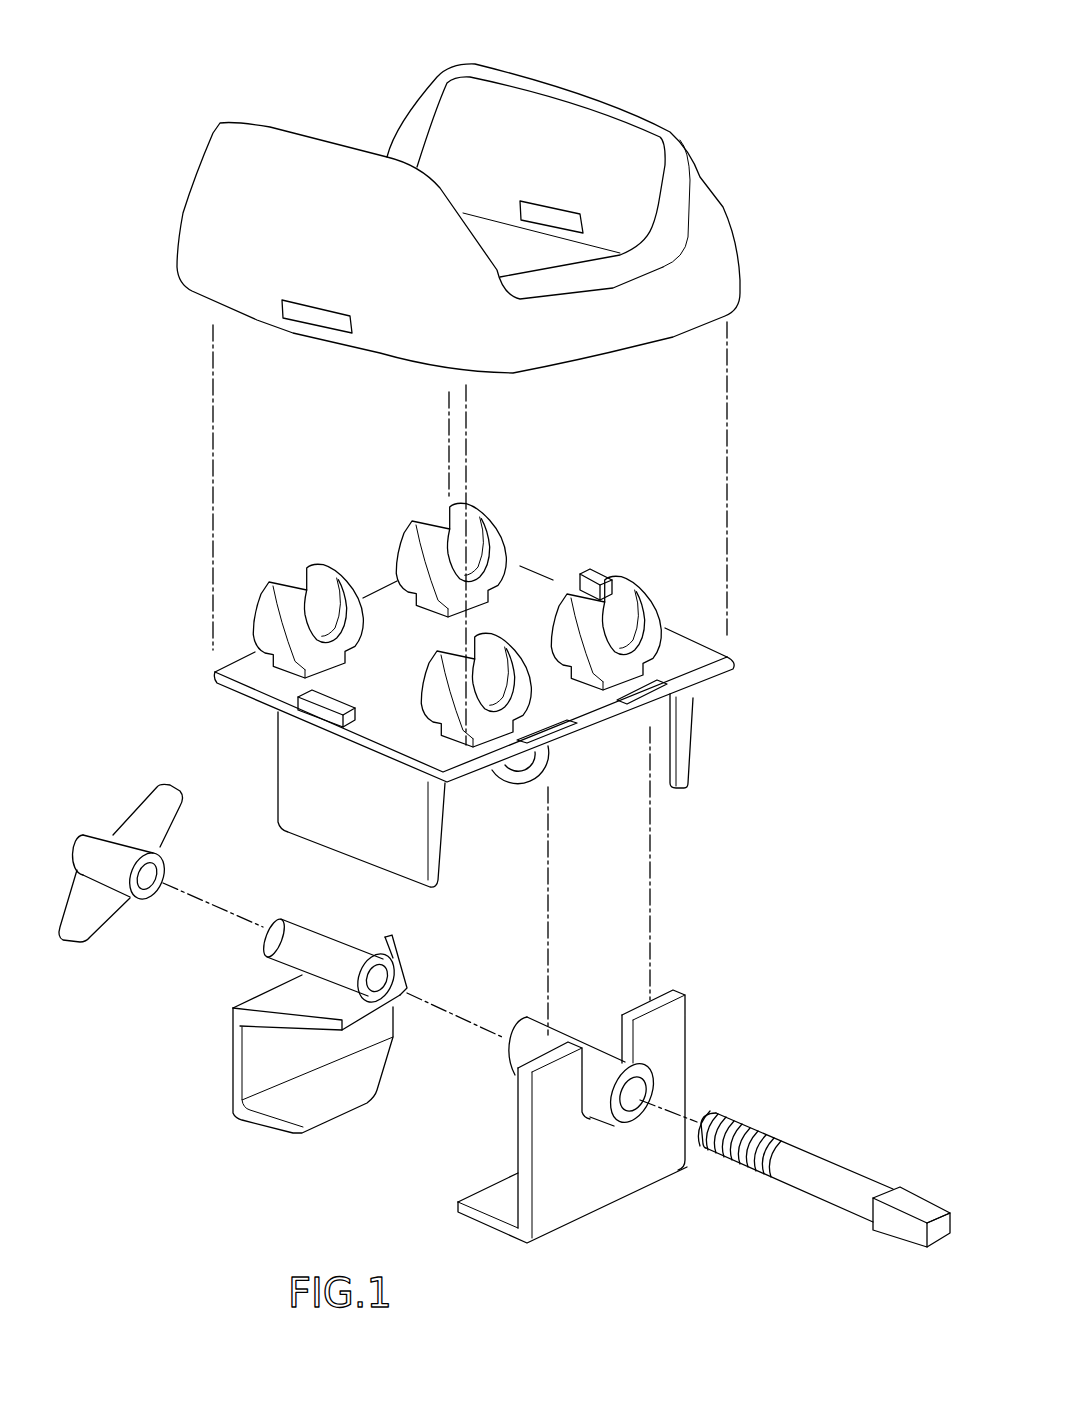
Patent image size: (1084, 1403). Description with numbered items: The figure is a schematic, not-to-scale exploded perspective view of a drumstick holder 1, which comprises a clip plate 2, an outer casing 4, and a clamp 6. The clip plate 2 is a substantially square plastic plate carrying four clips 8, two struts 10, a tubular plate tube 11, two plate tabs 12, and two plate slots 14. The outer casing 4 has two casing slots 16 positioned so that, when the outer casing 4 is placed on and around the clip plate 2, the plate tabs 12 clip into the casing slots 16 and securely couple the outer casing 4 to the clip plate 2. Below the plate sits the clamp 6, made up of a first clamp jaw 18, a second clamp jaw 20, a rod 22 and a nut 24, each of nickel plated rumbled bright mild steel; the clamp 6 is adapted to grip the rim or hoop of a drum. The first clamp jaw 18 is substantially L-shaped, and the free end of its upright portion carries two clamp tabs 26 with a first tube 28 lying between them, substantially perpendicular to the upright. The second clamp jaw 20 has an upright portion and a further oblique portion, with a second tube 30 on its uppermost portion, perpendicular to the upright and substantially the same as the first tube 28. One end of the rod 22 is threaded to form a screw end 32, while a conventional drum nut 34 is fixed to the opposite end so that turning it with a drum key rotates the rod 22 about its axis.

The drumstick holder 1 is at (722, 67).
The clip plate 2 is at (470, 679).
The outer casing 4 is at (494, 233).
The clamp 6 is at (162, 1027).
The clips 8 is at (278, 582).
The struts 10 is at (297, 763).
The plate tube 11 is at (530, 783).
The plate tabs 12 is at (298, 697).
The plate slots 14 is at (667, 687).
The casing slots 16 is at (563, 213).
The first clamp jaw 18 is at (608, 1099).
The second clamp jaw 20 is at (260, 1087).
The rod 22 is at (824, 1190).
The nut 24 is at (95, 843).
The clamp tabs 26 is at (670, 1010).
The first tube 28 is at (630, 1117).
The second tube 30 is at (300, 933).
The screw end 32 is at (740, 1153).
The drum nut 34 is at (907, 1233).